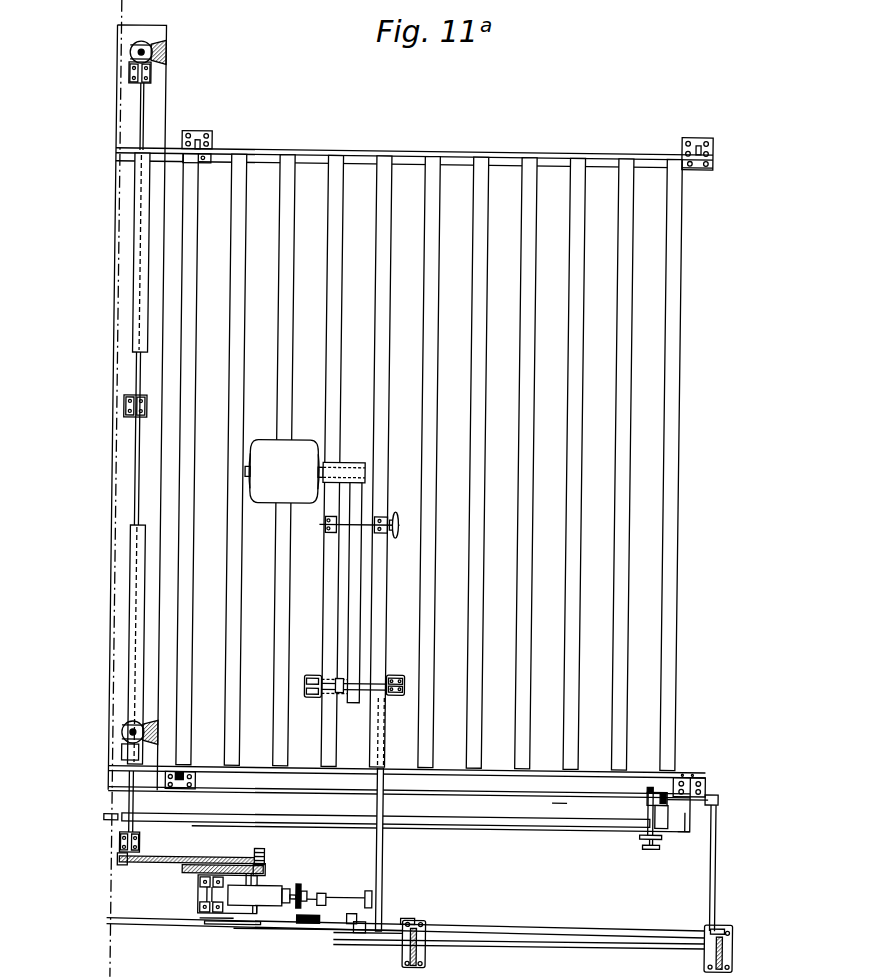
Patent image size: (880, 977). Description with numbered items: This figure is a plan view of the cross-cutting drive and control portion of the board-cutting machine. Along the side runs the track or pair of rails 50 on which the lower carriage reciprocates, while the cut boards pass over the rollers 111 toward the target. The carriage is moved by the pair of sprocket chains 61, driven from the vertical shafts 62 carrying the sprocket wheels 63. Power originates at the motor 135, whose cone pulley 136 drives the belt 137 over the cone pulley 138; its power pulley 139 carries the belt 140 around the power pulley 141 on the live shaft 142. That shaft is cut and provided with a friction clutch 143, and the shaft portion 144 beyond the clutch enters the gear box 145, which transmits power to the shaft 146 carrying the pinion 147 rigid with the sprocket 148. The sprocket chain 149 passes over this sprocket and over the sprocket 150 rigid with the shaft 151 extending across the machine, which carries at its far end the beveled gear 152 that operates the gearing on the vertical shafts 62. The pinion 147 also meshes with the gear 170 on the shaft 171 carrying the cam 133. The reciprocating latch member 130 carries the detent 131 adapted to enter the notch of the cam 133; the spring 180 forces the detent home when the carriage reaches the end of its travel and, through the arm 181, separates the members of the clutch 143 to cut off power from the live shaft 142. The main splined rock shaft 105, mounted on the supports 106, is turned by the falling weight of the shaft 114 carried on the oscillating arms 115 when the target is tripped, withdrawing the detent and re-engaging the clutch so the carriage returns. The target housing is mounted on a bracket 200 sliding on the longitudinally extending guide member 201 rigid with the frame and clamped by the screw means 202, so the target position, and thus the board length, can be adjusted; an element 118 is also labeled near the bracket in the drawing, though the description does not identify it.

The track or pair of rails 50 is at (118, 814).
The sprocket chains 61 is at (131, 44).
The vertical shafts 62 is at (137, 55).
The sprocket wheels 63 is at (135, 49).
The splined rock shaft 105 is at (145, 926).
The supports 106 is at (435, 953).
The rollers 111 is at (196, 256).
The shaft 114 is at (568, 797).
The oscillating arms 115 is at (724, 900).
The actuator 118 is at (655, 787).
The reciprocating latch member 130 is at (254, 930).
The detent 131 is at (236, 924).
The cam 133 is at (207, 923).
The motor 135 is at (297, 444).
The cone pulley 136 is at (346, 460).
The belt 137 is at (352, 568).
The cone pulley 138 is at (351, 672).
The power pulley 139 is at (397, 673).
The belt 140 is at (392, 784).
The power pulley 141 is at (392, 872).
The live shaft 142 is at (348, 897).
The friction clutch 143 is at (325, 893).
The shaft portion 144 is at (285, 900).
The gear box 145 is at (271, 882).
The shaft 146 is at (263, 864).
The pinion 147 is at (275, 869).
The sprocket 148 is at (272, 855).
The sprocket chain 149 is at (156, 863).
The sprocket 150 is at (125, 860).
The shaft 151 is at (142, 112).
The beveled gear 152 is at (130, 67).
The gear 170 is at (194, 871).
The shaft 171 is at (214, 891).
The spring 180 is at (313, 924).
The arm 181 is at (306, 892).
The bracket 200 is at (650, 806).
The guide member 201 is at (193, 816).
The screw means 202 is at (645, 845).